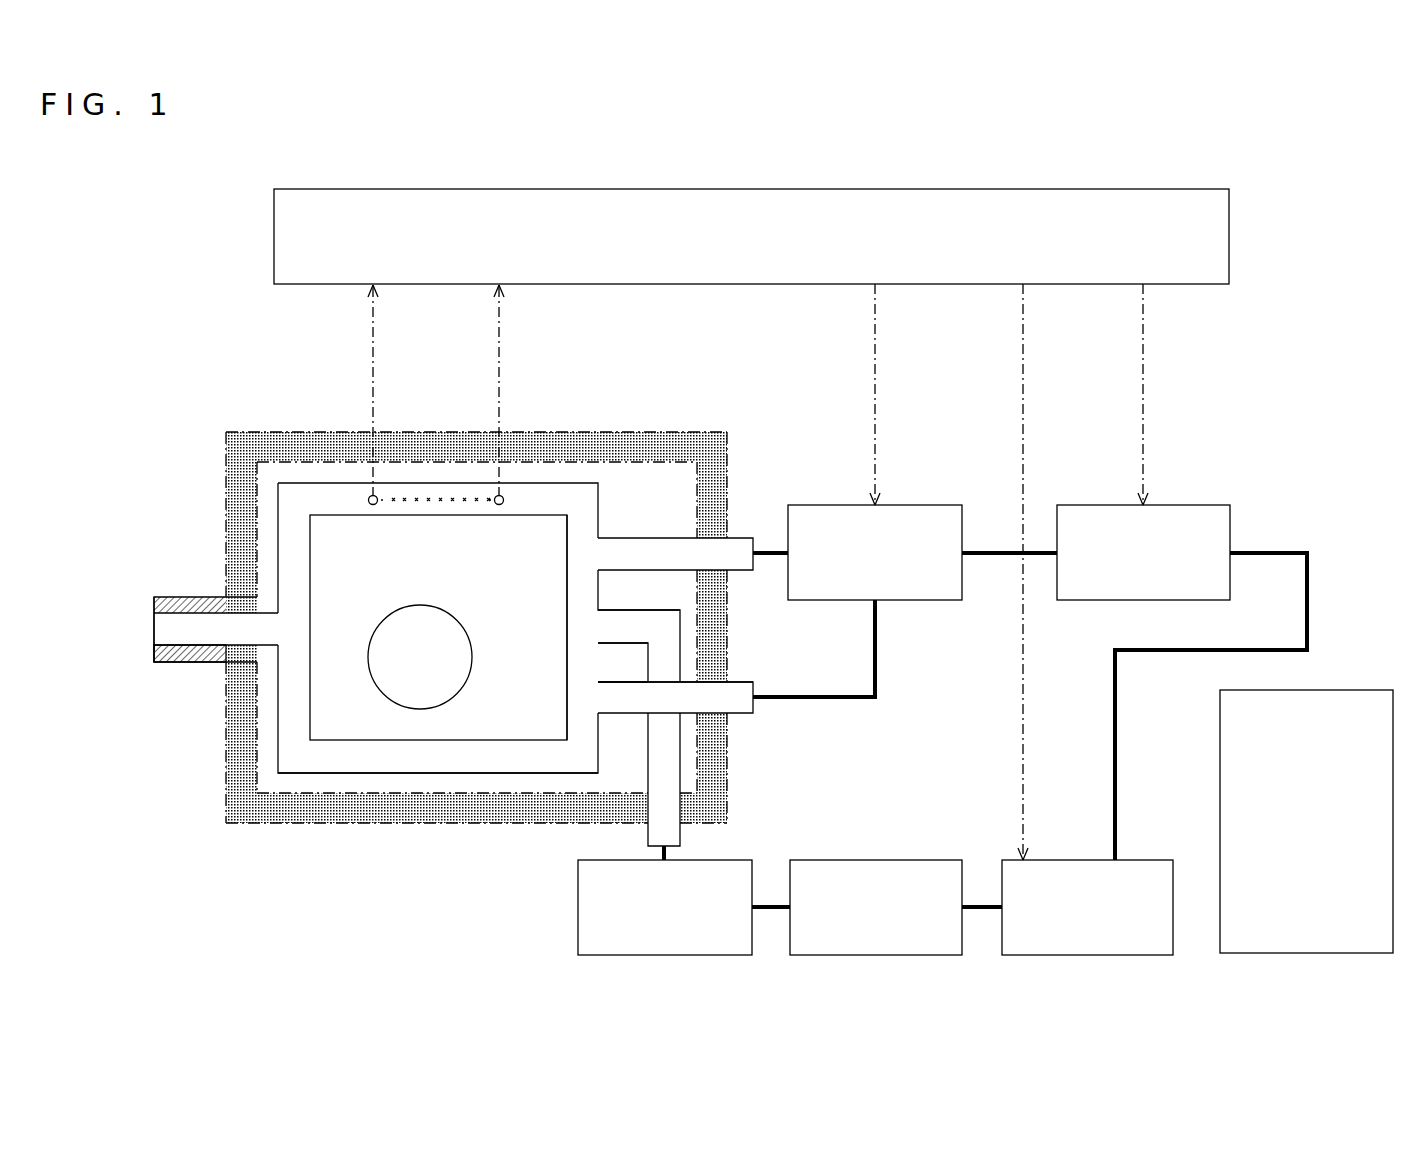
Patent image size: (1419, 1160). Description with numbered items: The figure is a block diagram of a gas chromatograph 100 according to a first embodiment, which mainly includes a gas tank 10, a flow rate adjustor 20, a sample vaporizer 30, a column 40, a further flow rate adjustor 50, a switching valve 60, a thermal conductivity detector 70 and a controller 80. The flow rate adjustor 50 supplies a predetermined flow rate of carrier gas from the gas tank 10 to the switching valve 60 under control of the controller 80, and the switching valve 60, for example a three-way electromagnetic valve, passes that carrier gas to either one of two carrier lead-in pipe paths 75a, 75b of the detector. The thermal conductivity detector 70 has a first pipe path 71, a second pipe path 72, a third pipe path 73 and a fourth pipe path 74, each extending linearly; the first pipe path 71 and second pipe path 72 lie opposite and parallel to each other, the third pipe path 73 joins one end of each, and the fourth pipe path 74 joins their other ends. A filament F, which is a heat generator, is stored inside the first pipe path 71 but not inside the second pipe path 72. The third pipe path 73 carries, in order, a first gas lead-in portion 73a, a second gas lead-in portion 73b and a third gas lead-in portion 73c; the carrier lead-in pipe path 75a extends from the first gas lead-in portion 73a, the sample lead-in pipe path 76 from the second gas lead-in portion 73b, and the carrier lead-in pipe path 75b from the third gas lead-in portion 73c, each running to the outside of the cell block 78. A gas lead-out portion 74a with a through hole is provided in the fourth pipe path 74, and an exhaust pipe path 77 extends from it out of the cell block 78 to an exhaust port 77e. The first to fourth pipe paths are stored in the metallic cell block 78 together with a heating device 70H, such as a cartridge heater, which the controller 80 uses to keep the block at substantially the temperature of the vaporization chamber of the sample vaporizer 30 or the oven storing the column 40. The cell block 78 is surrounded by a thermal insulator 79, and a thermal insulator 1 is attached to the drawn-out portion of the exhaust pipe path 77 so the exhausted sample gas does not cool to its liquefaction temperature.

The thermal insulator 1 is at (197, 652).
The gas tank 10 is at (1335, 690).
The flow rate adjustor 20 is at (1144, 858).
The sample vaporizer 30 is at (905, 858).
The column 40 is at (688, 860).
The flow rate adjustor 50 is at (1172, 505).
The switching valve 60 is at (903, 504).
The thermal conductivity detector 70 is at (256, 393).
The heating device 70H is at (397, 672).
The first pipe path 71 is at (370, 517).
The second pipe path 72 is at (410, 777).
The third pipe path 73 is at (567, 618).
The first gas lead-in portion 73a is at (597, 553).
The second gas lead-in portion 73b is at (598, 627).
The third gas lead-in portion 73c is at (598, 702).
The fourth pipe path 74 is at (310, 560).
The gas lead-out portion 74a is at (278, 628).
The carrier lead-in pipe path 75a is at (740, 532).
The carrier lead-in pipe path 75b is at (742, 715).
The sample lead-in pipe path 76 is at (648, 777).
The exhaust pipe path 77 is at (203, 612).
The exhaust port 77e is at (153, 628).
The cell block 78 is at (657, 440).
The thermal insulator 79 is at (573, 442).
The controller 80 is at (1172, 188).
The gas chromatograph 100 is at (1348, 205).
The filament F is at (397, 487).